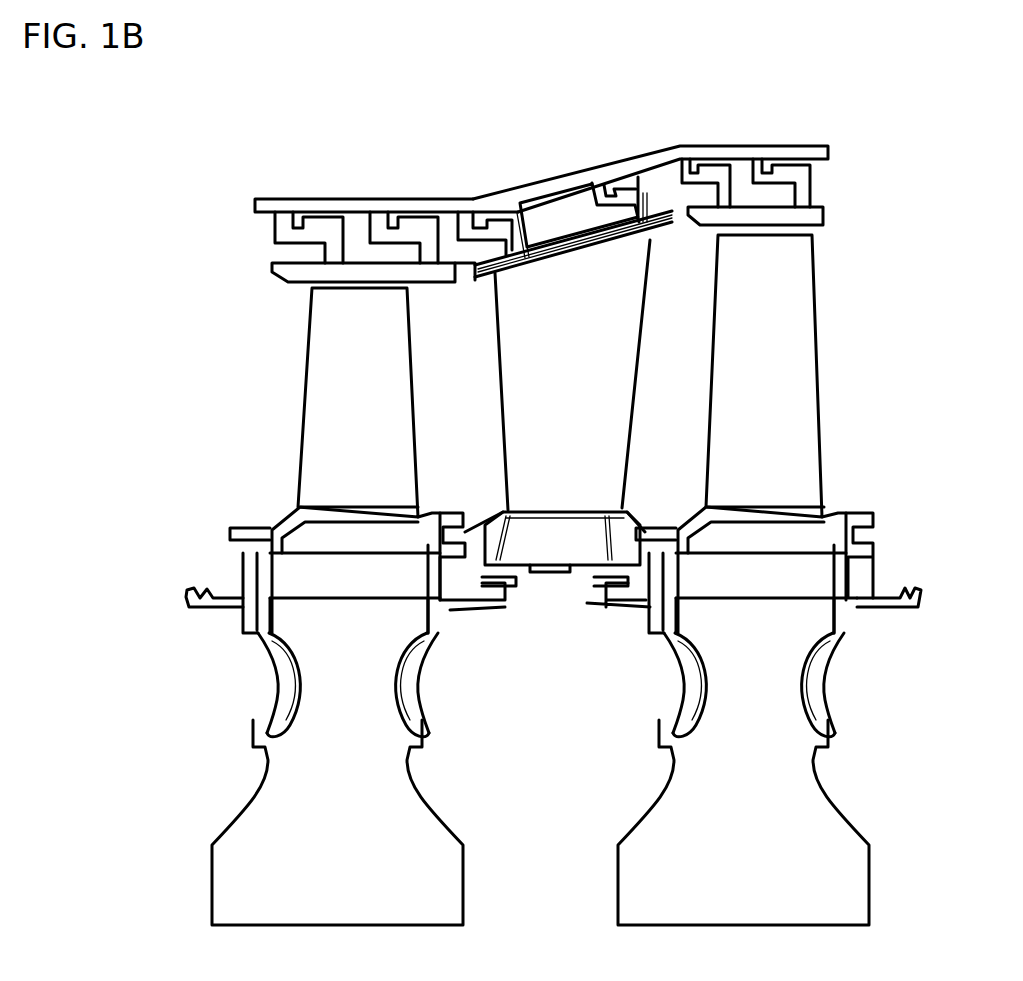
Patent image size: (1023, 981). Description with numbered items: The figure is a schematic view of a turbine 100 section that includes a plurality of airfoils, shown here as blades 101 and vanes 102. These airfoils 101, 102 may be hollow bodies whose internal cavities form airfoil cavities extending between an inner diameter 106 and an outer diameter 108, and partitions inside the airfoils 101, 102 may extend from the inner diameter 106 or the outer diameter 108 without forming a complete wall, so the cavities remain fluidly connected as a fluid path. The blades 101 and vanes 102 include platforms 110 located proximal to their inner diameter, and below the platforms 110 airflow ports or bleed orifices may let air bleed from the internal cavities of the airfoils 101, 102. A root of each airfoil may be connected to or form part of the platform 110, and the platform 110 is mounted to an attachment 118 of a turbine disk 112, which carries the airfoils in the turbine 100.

The turbine 100 is at (108, 214).
The blade 101 is at (395, 365).
The vane 102 is at (622, 335).
The inner diameter 106 is at (498, 494).
The outer diameter 108 is at (282, 301).
The platform 110 is at (648, 485).
The turbine disk 112 is at (425, 848).
The attachment 118 is at (326, 590).